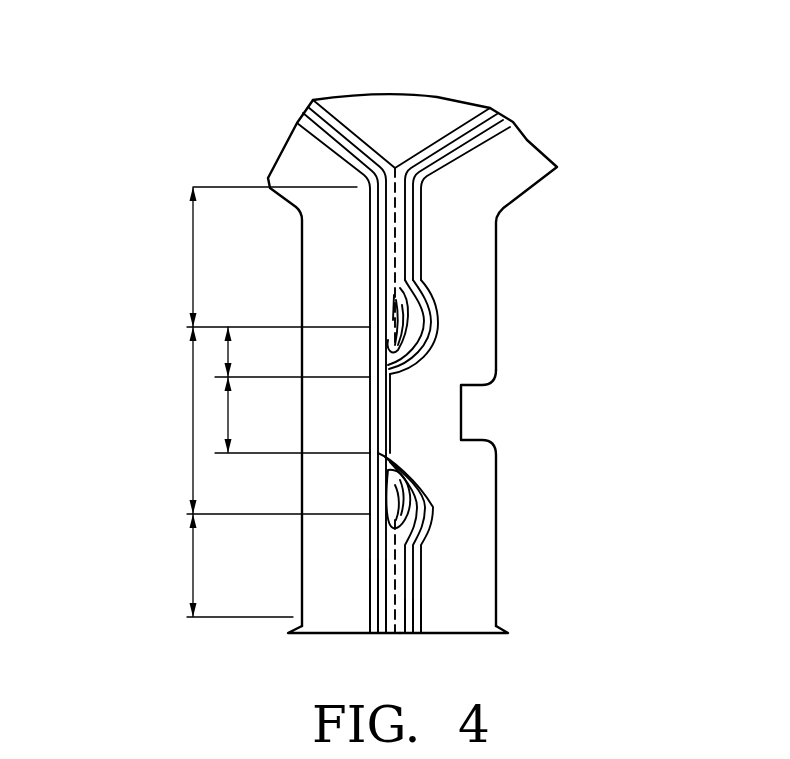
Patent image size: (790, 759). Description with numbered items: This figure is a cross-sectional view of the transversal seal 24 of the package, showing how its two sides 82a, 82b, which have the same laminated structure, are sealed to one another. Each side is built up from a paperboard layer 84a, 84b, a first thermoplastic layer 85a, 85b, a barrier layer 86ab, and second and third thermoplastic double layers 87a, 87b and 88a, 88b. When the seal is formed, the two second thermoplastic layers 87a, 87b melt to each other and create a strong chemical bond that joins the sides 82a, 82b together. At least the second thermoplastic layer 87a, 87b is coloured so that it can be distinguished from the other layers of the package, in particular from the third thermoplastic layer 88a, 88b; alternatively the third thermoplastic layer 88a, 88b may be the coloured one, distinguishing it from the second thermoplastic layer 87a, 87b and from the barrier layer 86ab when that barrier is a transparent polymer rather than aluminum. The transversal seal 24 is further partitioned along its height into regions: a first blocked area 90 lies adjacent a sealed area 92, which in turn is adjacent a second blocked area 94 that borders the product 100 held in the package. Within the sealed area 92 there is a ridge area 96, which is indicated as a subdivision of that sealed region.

The transversal seal 24 is at (449, 348).
The product 100 is at (422, 112).
The second thermoplastic layer 87a is at (490, 108).
The second thermoplastic layer 87b is at (313, 100).
The first thermoplastic layer 85a is at (511, 131).
The first thermoplastic layer 85b is at (296, 123).
The barrier layer 86ab is at (377, 218).
The paperboard layer 84a is at (477, 584).
The paperboard layer 84b is at (380, 577).
The side 82a is at (483, 635).
The side 82b is at (307, 635).
The third thermoplastic layer 88a is at (412, 637).
The third thermoplastic layer 88b is at (380, 647).
The second blocked area 94 is at (162, 276).
The sealed area 92 is at (163, 474).
The first blocked area 90 is at (165, 566).
The ridge area 96 is at (193, 418).